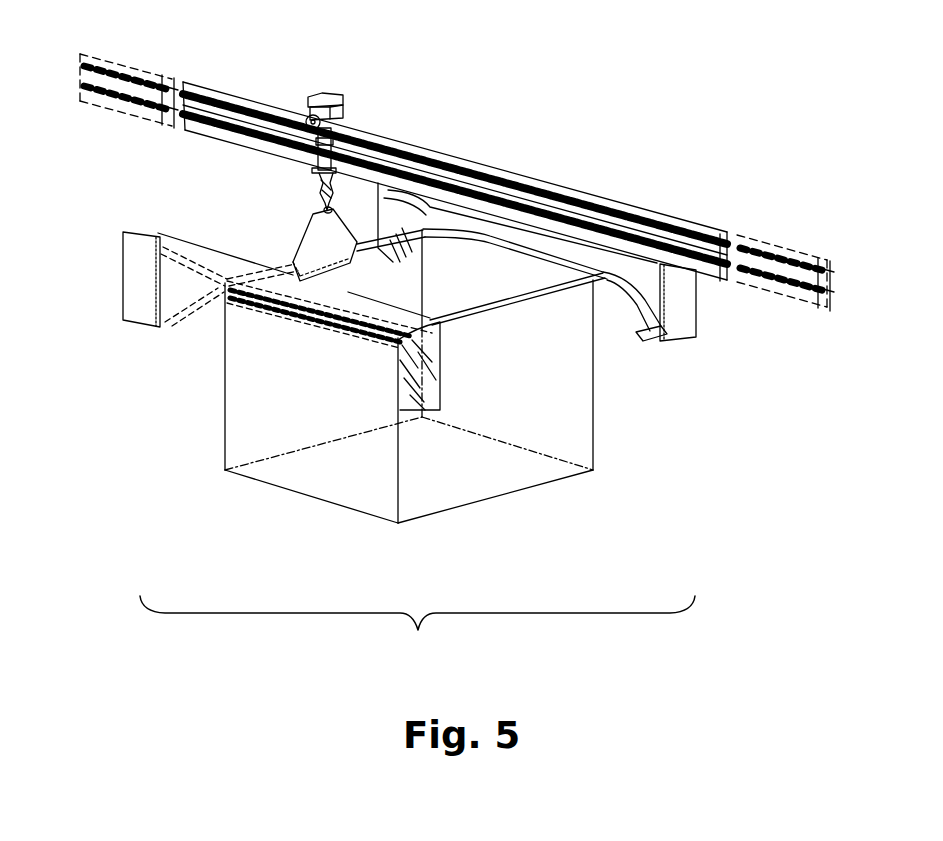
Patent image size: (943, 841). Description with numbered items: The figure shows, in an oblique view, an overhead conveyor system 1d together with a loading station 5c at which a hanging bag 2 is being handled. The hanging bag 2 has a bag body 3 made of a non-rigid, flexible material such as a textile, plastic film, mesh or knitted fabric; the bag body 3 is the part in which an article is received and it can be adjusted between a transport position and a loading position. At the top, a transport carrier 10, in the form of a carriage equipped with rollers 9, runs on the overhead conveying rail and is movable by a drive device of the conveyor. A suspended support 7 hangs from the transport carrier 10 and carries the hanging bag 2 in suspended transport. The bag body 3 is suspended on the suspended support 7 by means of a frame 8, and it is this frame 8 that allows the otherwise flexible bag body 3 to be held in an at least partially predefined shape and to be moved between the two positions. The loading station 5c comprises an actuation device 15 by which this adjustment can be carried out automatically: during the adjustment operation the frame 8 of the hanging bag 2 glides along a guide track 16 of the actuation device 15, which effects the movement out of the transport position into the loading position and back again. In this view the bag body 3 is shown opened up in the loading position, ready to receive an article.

The overhead conveyor system 1d is at (556, 98).
The hanging bag 2 is at (186, 424).
The bag body 3 is at (512, 475).
The loading station 5c is at (417, 428).
The suspended support 7 is at (313, 242).
The frame 8 is at (553, 287).
The rollers 9 is at (312, 114).
The transport carrier 10 is at (323, 158).
The actuation device 15 is at (135, 263).
The guide track 16 is at (617, 267).